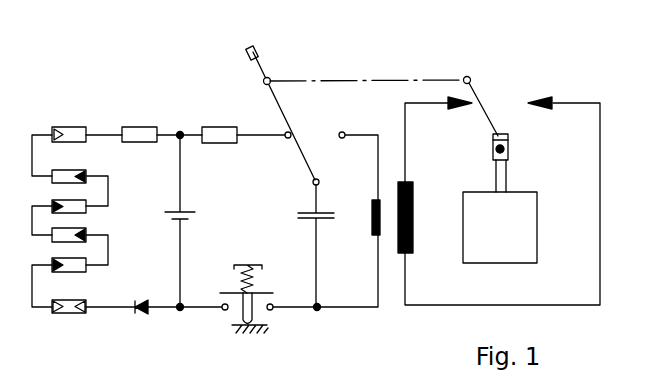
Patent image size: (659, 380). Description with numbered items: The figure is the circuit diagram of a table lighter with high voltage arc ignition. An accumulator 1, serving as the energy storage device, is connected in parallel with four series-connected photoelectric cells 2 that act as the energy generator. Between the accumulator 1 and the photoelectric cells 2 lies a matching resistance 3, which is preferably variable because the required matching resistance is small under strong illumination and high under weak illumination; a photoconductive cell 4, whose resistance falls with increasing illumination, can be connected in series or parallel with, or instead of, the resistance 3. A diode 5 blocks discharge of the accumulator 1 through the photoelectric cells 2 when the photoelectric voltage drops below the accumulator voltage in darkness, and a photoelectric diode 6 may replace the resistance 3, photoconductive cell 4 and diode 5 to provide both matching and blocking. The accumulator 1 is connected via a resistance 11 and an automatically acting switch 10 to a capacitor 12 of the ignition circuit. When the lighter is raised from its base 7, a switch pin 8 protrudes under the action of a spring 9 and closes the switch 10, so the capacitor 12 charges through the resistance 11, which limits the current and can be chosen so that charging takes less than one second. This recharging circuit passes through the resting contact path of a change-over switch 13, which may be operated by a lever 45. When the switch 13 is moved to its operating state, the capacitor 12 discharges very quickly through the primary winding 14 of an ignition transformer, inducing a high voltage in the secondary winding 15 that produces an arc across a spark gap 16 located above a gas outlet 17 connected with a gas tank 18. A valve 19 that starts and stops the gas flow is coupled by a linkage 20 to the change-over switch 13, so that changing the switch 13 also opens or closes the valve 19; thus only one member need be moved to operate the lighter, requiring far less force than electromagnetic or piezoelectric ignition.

The accumulator 1 is at (188, 207).
The photoelectric cells 2 is at (69, 180).
The matching resistance 3 is at (142, 127).
The photoconductive cell 4 is at (72, 314).
The diode 5 is at (141, 316).
The photoelectric diode 6 is at (69, 127).
The base 7 is at (263, 337).
The switch pin 8 is at (242, 317).
The spring 9 is at (252, 278).
The automatically acting switch 10 is at (225, 291).
The resistance 11 is at (220, 127).
The capacitor 12 is at (308, 220).
The change-over switch 13 is at (301, 151).
The primary winding 14 is at (370, 222).
The secondary winding 15 is at (413, 217).
The spark gap 16 is at (515, 102).
The gas outlet 17 is at (500, 134).
The gas tank 18 is at (523, 227).
The valve 19 is at (508, 148).
The linkage 20 is at (380, 78).
The lever 45 is at (257, 48).